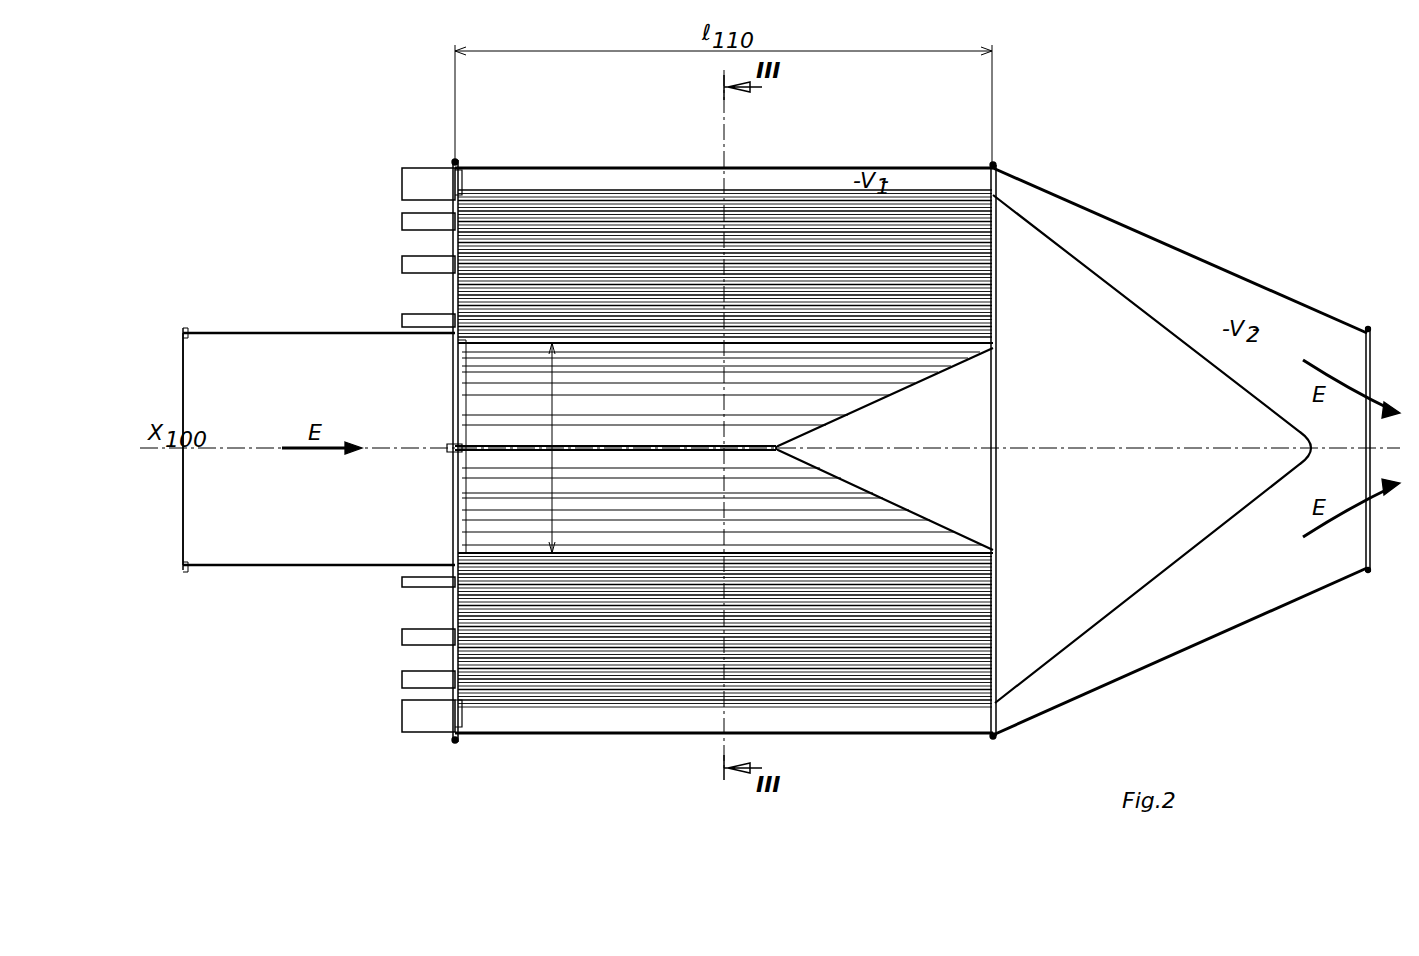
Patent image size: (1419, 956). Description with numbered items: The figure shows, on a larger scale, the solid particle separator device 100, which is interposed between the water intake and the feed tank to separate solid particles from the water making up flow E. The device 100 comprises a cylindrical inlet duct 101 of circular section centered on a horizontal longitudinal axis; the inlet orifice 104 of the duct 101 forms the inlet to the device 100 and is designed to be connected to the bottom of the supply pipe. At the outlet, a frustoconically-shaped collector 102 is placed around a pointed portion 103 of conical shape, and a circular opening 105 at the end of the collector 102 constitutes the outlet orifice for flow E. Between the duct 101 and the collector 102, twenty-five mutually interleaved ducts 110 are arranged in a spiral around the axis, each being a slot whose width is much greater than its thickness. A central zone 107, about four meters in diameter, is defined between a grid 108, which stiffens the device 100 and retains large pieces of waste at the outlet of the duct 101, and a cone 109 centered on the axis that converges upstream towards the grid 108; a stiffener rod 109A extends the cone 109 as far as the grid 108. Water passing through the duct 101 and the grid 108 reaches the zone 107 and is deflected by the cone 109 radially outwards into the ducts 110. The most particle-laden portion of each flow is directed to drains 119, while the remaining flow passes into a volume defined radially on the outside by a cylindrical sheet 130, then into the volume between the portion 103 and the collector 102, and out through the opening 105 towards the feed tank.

The solid particle separator device 100 is at (1158, 152).
The inlet duct 101 is at (262, 545).
The collector 102 is at (1178, 248).
The pointed portion 103 is at (1158, 582).
The inlet orifice 104 is at (178, 512).
The circular opening 105 is at (1374, 545).
The central zone 107 is at (680, 500).
The grid 108 is at (447, 512).
The cone 109 is at (945, 500).
The stiffener rod 109A is at (625, 450).
The ducts 110 is at (612, 690).
The drain 119 is at (412, 270).
The sheet 130 is at (828, 738).